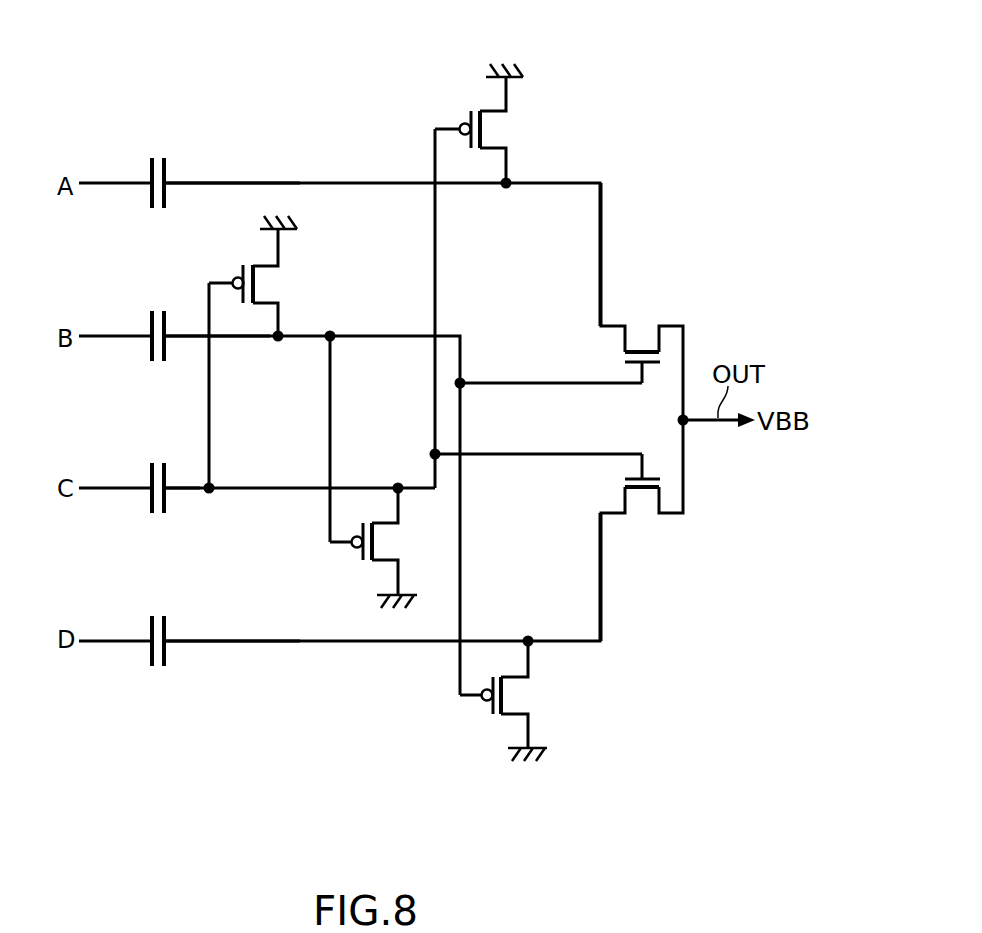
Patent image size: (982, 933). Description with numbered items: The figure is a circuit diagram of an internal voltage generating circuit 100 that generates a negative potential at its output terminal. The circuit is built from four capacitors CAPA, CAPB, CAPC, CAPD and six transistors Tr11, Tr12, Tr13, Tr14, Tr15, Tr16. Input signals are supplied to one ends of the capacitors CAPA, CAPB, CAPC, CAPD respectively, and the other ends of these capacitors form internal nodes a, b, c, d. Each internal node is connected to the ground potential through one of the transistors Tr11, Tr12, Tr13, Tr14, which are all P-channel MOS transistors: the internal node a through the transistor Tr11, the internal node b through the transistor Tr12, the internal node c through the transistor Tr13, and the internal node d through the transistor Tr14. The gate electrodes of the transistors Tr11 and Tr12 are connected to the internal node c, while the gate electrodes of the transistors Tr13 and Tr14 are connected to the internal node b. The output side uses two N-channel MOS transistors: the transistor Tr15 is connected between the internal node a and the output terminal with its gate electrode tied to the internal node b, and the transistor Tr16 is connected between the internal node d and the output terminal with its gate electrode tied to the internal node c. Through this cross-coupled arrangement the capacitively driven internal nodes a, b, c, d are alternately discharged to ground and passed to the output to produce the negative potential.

The internal voltage generating circuit 100 is at (678, 43).
The transistor Tr11 is at (483, 129).
The transistor Tr12 is at (257, 283).
The transistor Tr13 is at (376, 542).
The transistor Tr14 is at (505, 695).
The transistor Tr15 is at (643, 350).
The transistor Tr16 is at (636, 490).
The capacitor CAPA is at (150, 164).
The capacitor CAPB is at (150, 318).
The capacitor CAPC is at (150, 465).
The capacitor CAPD is at (150, 616).
The internal node a is at (232, 192).
The internal node b is at (217, 347).
The internal node c is at (182, 502).
The internal node d is at (232, 652).